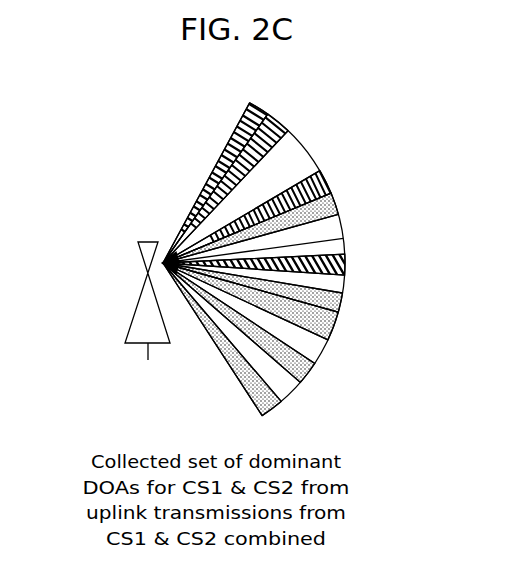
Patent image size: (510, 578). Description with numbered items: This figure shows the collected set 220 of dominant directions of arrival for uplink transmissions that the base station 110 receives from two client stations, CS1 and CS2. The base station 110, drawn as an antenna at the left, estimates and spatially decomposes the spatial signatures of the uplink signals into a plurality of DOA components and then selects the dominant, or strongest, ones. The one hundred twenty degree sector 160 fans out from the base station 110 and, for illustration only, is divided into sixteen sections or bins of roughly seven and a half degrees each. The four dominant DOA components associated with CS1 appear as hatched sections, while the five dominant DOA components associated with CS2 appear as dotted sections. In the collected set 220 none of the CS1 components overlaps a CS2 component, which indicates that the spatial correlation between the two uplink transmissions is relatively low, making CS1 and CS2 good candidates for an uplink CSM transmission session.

The base station 110 is at (148, 316).
The 120 degree sector 160 is at (401, 428).
The collected set of dominant DOA components 220 is at (121, 206).